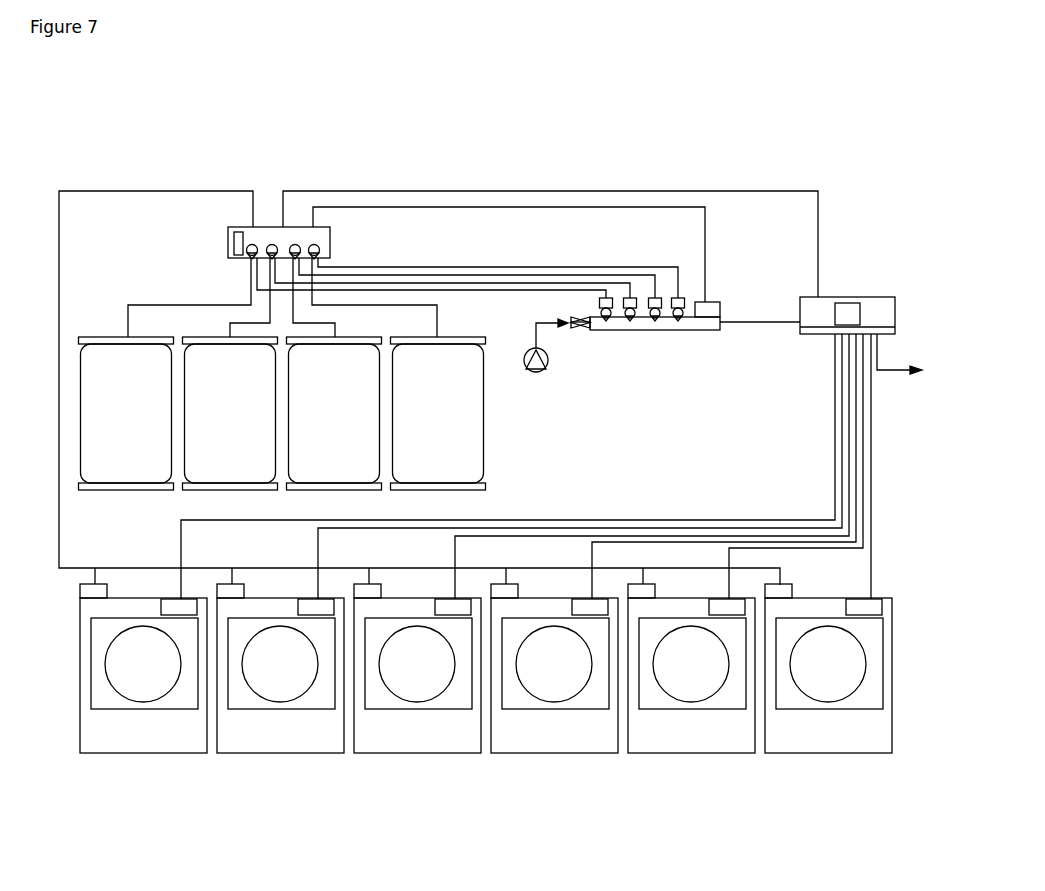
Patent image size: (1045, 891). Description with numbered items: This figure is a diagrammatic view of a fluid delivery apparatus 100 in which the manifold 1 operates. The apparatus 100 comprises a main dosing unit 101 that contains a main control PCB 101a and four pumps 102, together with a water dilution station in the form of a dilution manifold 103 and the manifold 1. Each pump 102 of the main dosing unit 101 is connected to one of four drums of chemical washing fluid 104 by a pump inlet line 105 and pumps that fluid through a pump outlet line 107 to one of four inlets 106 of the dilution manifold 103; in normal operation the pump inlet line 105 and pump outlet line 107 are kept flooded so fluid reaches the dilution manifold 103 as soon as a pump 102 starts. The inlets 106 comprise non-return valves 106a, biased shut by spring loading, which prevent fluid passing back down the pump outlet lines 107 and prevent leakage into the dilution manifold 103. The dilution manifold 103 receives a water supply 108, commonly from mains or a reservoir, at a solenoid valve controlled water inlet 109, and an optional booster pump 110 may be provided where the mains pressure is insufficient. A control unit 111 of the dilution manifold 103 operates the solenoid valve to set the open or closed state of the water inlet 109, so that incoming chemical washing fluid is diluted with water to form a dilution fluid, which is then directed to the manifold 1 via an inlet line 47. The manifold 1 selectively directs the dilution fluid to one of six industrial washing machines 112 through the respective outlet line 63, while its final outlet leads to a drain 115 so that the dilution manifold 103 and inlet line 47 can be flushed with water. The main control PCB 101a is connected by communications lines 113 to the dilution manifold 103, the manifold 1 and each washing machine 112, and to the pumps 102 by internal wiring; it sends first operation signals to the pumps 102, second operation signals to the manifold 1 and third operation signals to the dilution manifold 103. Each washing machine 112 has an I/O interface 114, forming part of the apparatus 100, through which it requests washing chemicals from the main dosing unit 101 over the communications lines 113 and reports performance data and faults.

The manifold 1 is at (830, 279).
The inlet line 47 is at (765, 304).
The outlet line 63 is at (872, 449).
The fluid delivery apparatus 100 is at (164, 134).
The main dosing unit 101 is at (275, 244).
The main control PCB 101a is at (228, 237).
The pump 102 is at (330, 242).
The dilution manifold 103 is at (645, 354).
The drum of chemical washing fluid 104 is at (483, 432).
The pump inlet line 105 is at (437, 322).
The inlet 106 is at (687, 274).
The non-return valve 106a is at (655, 302).
The pump outlet line 107 is at (593, 267).
The water supply 108 is at (545, 327).
The water inlet 109 is at (585, 332).
The booster pump 110 is at (536, 372).
The control unit 111 is at (720, 332).
The industrial washing machine 112 is at (882, 599).
The communications line 113 is at (430, 191).
The I/O interface 114 is at (98, 584).
The drain 115 is at (897, 365).